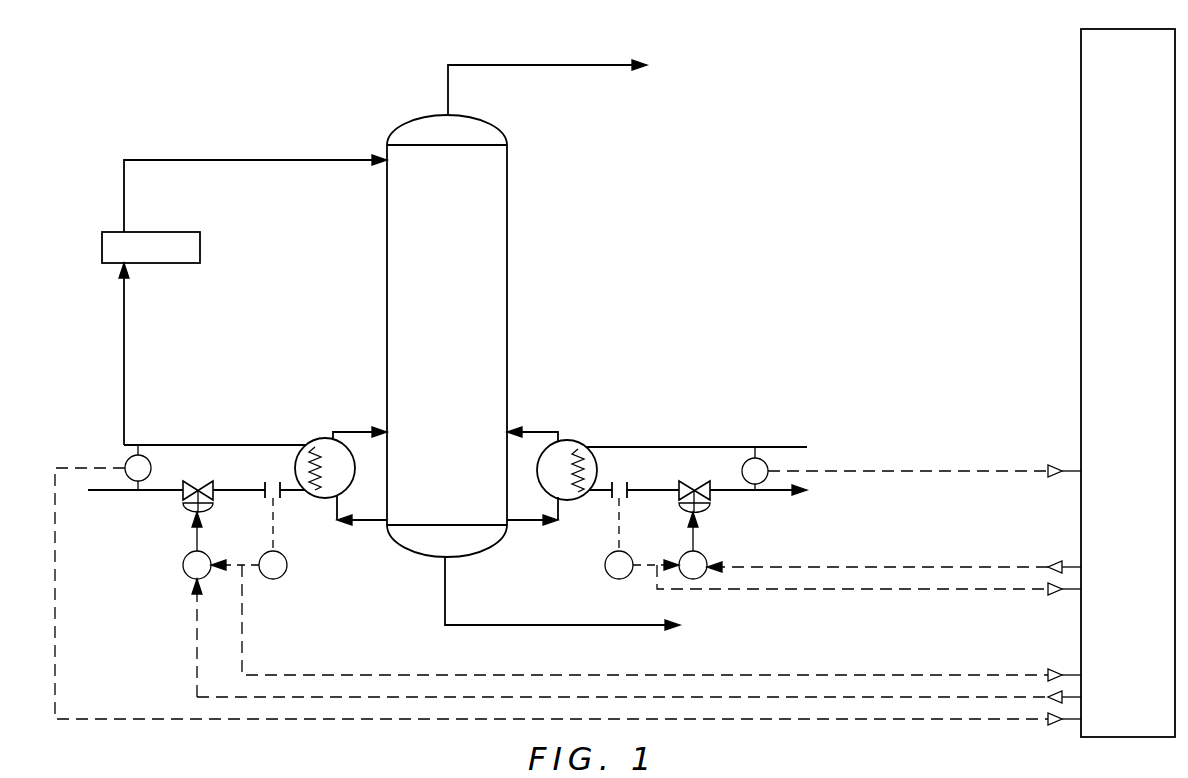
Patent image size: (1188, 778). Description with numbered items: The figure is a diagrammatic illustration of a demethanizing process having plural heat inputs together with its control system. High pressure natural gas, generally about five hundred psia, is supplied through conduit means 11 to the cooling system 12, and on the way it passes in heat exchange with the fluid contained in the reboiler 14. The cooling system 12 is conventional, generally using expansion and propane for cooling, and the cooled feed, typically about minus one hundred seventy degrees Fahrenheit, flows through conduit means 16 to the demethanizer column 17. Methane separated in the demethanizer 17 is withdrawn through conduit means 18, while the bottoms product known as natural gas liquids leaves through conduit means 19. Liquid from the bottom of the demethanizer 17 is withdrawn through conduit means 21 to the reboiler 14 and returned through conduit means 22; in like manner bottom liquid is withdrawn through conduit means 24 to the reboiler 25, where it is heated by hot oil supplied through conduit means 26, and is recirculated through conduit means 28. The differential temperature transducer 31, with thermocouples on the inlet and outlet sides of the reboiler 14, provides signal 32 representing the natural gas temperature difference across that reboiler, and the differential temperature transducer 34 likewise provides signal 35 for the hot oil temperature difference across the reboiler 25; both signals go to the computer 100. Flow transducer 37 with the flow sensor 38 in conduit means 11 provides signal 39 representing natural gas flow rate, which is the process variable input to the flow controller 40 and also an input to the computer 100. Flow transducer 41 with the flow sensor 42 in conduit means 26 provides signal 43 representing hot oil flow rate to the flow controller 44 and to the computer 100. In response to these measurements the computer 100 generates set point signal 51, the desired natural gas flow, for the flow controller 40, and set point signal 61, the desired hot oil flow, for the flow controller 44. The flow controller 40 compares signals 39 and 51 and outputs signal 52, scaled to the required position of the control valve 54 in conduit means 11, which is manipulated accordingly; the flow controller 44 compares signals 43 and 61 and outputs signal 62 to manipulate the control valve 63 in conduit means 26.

The conduit means 11 is at (88, 492).
The cooling system 12 is at (170, 265).
The reboiler 14 is at (316, 438).
The conduit means 16 is at (125, 193).
The demethanizer column 17 is at (508, 185).
The conduit means 18 is at (535, 62).
The conduit means 19 is at (445, 597).
The conduit means 21 is at (387, 527).
The conduit means 22 is at (365, 431).
The conduit means 24 is at (508, 527).
The reboiler 25 is at (567, 440).
The conduit means 26 is at (718, 446).
The conduit means 28 is at (530, 431).
The differential temperature transducer 31 is at (151, 468).
The output signal 32 is at (57, 695).
The differential temperature transducer 34 is at (741, 471).
The output signal 35 is at (985, 468).
The flow transducer 37 is at (287, 565).
The flow sensor 38 is at (283, 496).
The output signal 39 is at (248, 557).
The flow controller 40 is at (183, 565).
The flow transducer 41 is at (604, 566).
The flow sensor 42 is at (630, 484).
The output signal 43 is at (657, 558).
The flow controller 44 is at (706, 553).
The set point signal 51 is at (195, 600).
The output signal 52 is at (200, 538).
The control valve 54 is at (212, 482).
The set point signal 61 is at (955, 565).
The output signal 62 is at (690, 542).
The control valve 63 is at (712, 505).
The computer 100 is at (1081, 106).